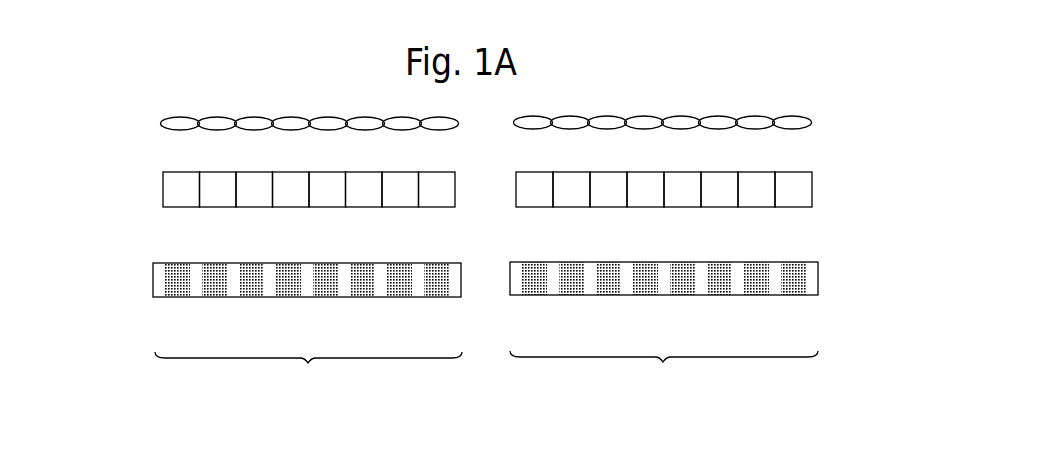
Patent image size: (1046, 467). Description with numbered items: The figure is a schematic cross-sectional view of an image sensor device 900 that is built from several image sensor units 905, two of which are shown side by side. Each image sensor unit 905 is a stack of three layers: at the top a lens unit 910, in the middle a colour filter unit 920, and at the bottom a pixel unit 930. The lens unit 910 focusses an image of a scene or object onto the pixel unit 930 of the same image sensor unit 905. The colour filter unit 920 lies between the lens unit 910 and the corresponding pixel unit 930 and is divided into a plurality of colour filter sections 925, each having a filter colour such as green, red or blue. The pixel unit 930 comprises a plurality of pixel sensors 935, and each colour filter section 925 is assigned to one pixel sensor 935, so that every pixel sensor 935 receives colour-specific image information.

The image sensor device 900 is at (765, 63).
The image sensor unit 905 is at (486, 379).
The lens unit 910 is at (160, 124).
The colour filter unit 920 is at (163, 188).
The colour filter section 925 is at (253, 208).
The pixel unit 930 is at (153, 281).
The pixel sensor 935 is at (253, 298).